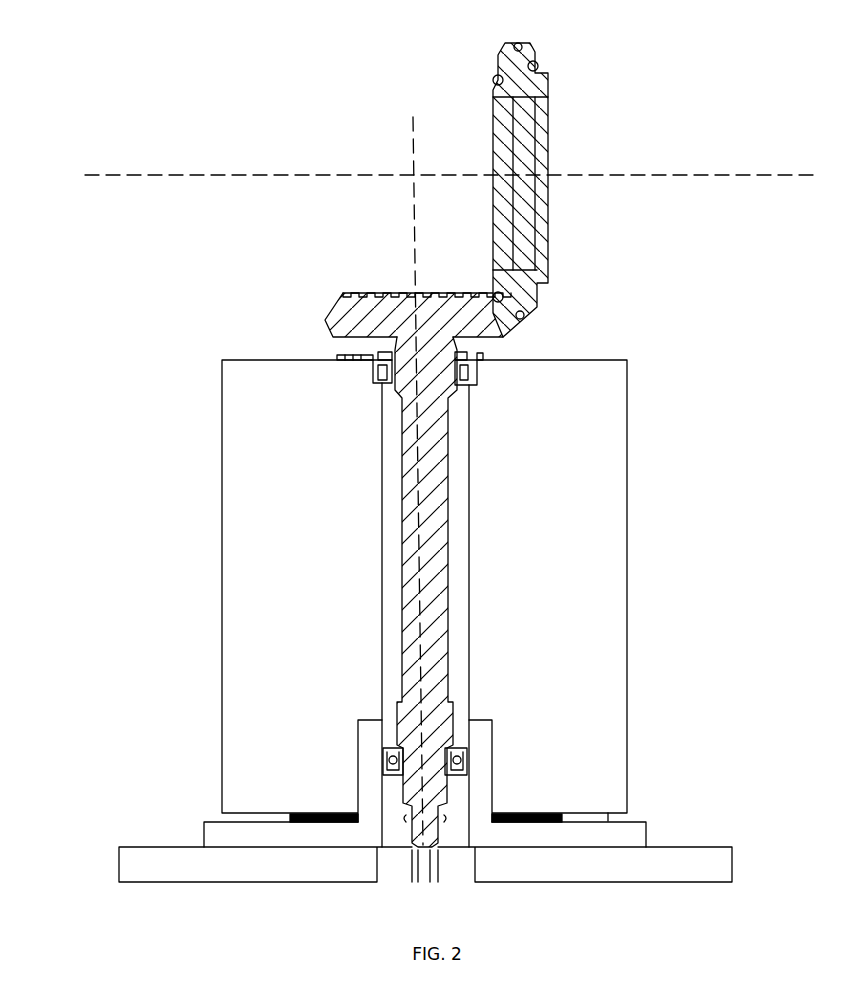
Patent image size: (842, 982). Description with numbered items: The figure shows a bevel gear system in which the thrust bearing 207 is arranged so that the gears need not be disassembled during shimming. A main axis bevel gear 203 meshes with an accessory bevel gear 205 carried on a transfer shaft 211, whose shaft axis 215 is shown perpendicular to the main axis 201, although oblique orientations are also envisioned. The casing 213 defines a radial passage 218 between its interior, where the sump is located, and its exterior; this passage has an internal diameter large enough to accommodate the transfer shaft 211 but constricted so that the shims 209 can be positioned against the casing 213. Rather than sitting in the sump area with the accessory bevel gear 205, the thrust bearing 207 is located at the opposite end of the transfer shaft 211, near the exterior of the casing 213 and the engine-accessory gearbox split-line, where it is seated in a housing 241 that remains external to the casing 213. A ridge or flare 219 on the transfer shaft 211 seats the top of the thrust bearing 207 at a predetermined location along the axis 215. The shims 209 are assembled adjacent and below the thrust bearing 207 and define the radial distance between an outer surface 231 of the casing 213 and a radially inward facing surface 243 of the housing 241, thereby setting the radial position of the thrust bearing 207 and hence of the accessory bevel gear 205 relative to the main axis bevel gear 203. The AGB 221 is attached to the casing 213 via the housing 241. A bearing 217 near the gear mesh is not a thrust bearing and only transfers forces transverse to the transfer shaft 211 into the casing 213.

The main axis 201 is at (762, 178).
The main axis bevel gear 203 is at (541, 222).
The accessory bevel gear 205 is at (478, 293).
The thrust bearing 207 is at (462, 760).
The shims 209 is at (540, 822).
The transfer shaft 211 is at (423, 512).
The casing 213 is at (605, 392).
The shaft axis 215 is at (412, 134).
The bearing 217 is at (385, 372).
The radial passage 218 is at (386, 590).
The ridge or flare 219 is at (457, 750).
The AGB 221 is at (140, 867).
The outer surface 231 is at (608, 822).
The housing 241 is at (633, 835).
The radially inward facing surface 243 is at (212, 822).